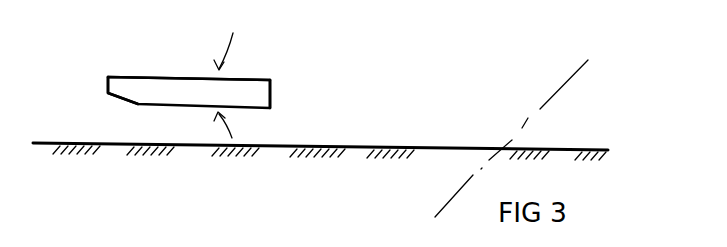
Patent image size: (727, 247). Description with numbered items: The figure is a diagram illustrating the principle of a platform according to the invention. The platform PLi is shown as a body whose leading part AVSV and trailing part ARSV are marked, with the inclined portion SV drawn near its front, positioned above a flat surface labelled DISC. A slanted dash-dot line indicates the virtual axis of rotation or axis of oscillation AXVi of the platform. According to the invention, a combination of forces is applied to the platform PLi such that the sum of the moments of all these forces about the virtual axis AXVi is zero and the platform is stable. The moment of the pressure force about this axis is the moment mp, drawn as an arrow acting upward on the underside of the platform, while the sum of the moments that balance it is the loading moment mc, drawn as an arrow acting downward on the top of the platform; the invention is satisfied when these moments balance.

The slider SV is at (150, 105).
The platform PLi is at (107, 76).
The leading (front) edge of slider AVSV is at (108, 94).
The trailing (rear) edge of slider ARSV is at (270, 108).
The loading moment mc is at (237, 51).
The moment of the pressure force mp is at (238, 124).
The magnetic disc surface DISC is at (350, 150).
The virtual axis of rotation or axis of oscillation AXVi is at (540, 109).